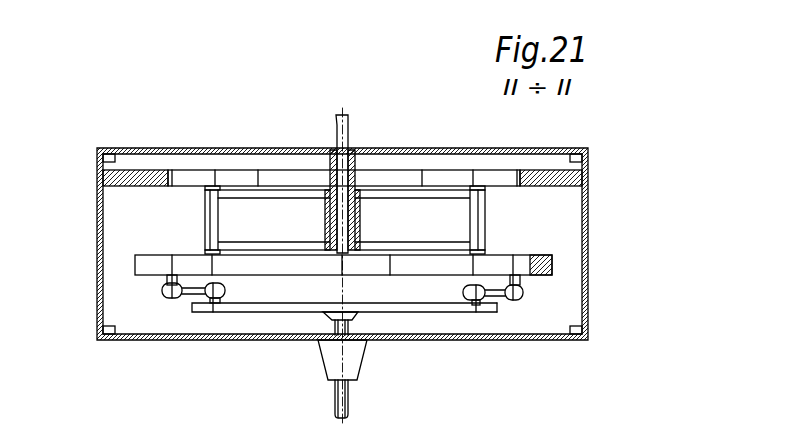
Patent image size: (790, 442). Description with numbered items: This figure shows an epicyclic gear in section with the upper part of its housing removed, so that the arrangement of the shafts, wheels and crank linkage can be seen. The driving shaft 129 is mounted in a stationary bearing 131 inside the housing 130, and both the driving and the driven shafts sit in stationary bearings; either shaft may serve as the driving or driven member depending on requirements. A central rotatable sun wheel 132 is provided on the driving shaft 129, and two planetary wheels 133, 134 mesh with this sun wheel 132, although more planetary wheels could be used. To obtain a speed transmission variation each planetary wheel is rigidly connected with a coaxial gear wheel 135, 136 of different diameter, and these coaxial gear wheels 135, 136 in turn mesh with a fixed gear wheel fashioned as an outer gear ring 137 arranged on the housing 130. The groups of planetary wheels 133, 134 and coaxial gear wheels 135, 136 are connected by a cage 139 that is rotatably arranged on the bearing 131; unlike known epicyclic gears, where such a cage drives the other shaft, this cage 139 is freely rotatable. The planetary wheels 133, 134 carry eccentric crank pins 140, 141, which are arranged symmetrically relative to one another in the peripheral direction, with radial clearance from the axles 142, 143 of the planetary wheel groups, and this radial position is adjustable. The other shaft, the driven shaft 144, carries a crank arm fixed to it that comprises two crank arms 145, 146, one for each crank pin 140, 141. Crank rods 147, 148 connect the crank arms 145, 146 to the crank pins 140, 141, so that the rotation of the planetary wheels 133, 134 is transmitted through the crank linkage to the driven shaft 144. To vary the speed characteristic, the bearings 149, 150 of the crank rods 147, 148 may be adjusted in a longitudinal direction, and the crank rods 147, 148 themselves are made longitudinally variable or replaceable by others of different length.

The driving shaft 129 is at (339, 118).
The housing 130 is at (178, 148).
The bearing 131 is at (354, 152).
The sun wheel 132 is at (362, 268).
The planetary wheel 133 is at (135, 262).
The planetary wheel 134 is at (552, 260).
The coaxial gear wheel 135 is at (207, 177).
The coaxial gear wheel 136 is at (450, 178).
The outer gear ring 137 is at (133, 175).
The cage 139 is at (282, 190).
The crank pin 140 is at (167, 282).
The crank pin 141 is at (525, 282).
The axle 142 is at (205, 218).
The axle 143 is at (487, 220).
The driven shaft 144 is at (337, 398).
The crank arm 145 is at (250, 308).
The crank arm 146 is at (435, 307).
The crank rod 147 is at (190, 293).
The crank rod 148 is at (497, 297).
The bearing 149 is at (212, 303).
The bearing 150 is at (475, 302).